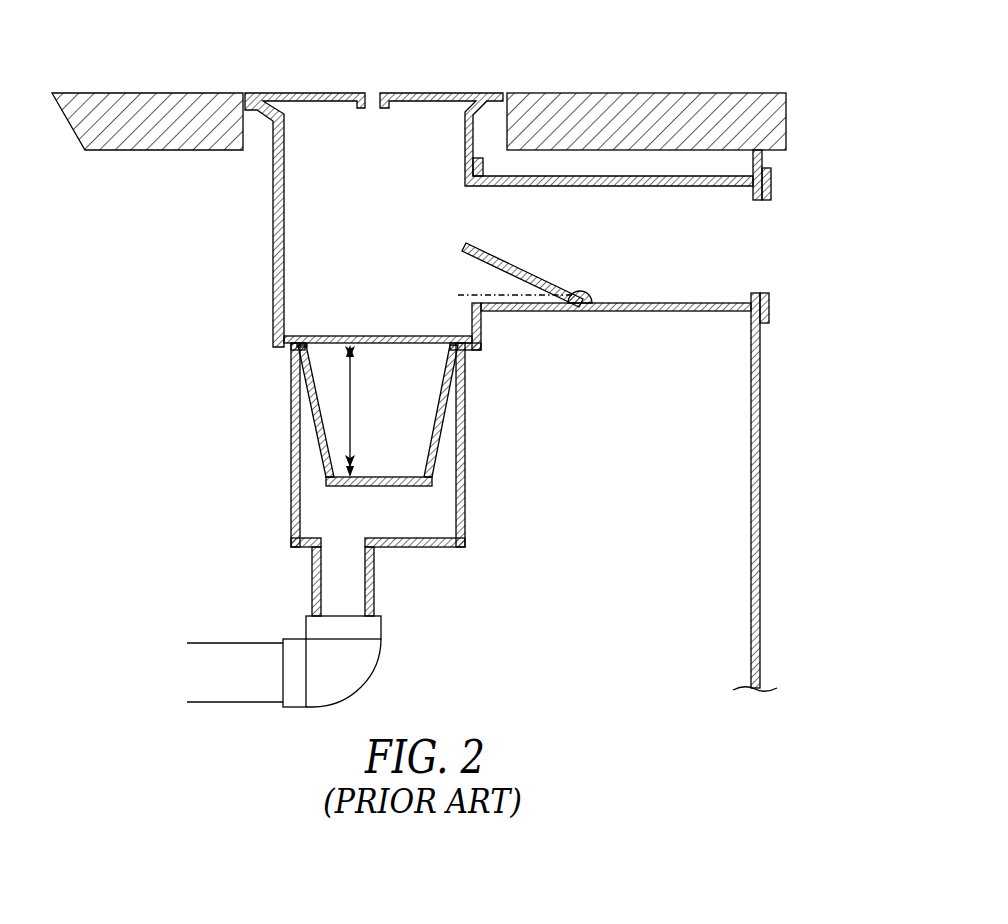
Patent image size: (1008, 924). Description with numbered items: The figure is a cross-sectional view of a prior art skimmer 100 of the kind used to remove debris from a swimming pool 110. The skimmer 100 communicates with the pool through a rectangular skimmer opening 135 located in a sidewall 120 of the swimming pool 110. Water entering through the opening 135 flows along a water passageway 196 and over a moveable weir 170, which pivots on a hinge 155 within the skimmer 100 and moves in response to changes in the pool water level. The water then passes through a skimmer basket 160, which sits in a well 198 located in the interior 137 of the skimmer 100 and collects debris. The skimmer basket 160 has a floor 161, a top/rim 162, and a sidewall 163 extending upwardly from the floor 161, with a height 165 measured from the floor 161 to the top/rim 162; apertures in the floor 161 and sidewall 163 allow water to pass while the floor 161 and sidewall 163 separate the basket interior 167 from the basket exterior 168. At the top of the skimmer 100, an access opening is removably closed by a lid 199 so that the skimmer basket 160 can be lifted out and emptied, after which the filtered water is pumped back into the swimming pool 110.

The skimmer 100 is at (410, 60).
The swimming pool 110 is at (799, 584).
The sidewall 120 is at (762, 462).
The skimmer opening 135 is at (770, 249).
The interior 137 is at (298, 312).
The hinge 155 is at (592, 300).
The skimmer basket 160 is at (320, 440).
The floor 161 is at (325, 487).
The top/rim 162 is at (300, 352).
The sidewall 163 is at (312, 396).
The height 165 is at (350, 410).
The basket interior 167 is at (410, 466).
The basket exterior 168 is at (433, 522).
The weir 170 is at (478, 257).
The water passageway 196 is at (624, 213).
The well 198 is at (445, 460).
The lid 199 is at (293, 93).